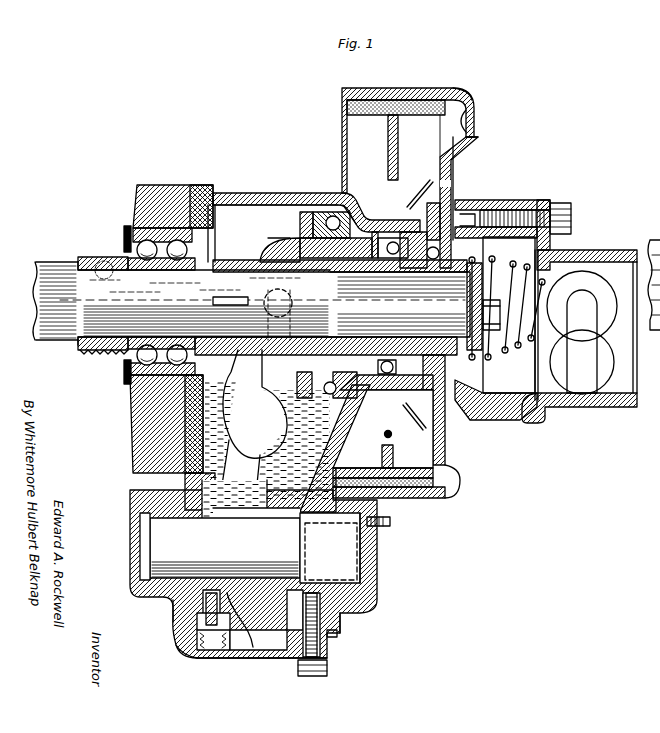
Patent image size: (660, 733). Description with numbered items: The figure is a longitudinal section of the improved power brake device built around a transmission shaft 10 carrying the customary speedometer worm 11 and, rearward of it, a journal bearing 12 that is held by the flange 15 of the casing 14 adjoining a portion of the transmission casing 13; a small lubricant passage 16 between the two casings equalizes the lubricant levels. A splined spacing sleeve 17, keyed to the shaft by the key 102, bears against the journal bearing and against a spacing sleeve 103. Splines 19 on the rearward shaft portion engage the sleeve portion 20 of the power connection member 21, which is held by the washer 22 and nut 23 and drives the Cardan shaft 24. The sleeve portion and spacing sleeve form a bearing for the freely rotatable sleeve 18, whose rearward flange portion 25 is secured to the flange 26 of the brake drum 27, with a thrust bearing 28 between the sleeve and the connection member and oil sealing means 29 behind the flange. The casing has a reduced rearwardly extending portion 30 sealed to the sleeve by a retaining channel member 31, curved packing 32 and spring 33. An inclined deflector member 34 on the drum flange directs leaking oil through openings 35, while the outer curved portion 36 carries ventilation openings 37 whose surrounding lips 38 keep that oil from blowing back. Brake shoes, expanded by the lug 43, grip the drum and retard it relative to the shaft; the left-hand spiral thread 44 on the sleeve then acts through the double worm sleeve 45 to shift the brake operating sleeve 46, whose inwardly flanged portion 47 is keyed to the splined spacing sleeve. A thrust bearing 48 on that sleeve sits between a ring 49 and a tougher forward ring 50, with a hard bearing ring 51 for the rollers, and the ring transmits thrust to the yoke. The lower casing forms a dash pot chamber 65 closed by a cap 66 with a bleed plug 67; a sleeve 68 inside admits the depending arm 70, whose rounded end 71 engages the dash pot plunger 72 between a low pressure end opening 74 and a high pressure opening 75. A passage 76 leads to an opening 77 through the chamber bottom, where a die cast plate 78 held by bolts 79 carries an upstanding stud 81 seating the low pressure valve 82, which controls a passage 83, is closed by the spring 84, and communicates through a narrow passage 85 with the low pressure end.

The transmission shaft 10 is at (104, 352).
The speedometer worm 11 is at (90, 262).
The journal bearing 12 is at (132, 226).
The transmission casing 13 is at (162, 185).
The casing 14 is at (238, 193).
The flange 15 is at (216, 212).
The lubricant passage 16 is at (130, 384).
The splined spacing sleeve 17 is at (220, 265).
The freely rotatable sleeve 18 is at (378, 394).
The splines 19 is at (293, 305).
The sleeve portion 20 is at (422, 280).
The power connection member 21 is at (530, 420).
The washer 22 is at (500, 268).
The nut 23 is at (510, 350).
The Cardan shaft 24 is at (615, 290).
The rearward flange portion 25 is at (458, 422).
The flange of brake drum 26 is at (455, 200).
The brake drum 27 is at (405, 88).
The thrust bearing 28 is at (487, 214).
The oil sealing means 29 is at (460, 214).
The reduced rearwardly extending portion 30 is at (380, 230).
The retaining channel member 31 is at (394, 232).
The curved packing 32 is at (412, 418).
The spring 33 is at (388, 430).
The inclined deflector member 34 is at (418, 193).
The openings 35 is at (452, 185).
The outer curved portion 36 is at (462, 94).
The ventilation openings 37 is at (470, 116).
The surrounding lips 38 is at (477, 138).
The lug 43 is at (655, 250).
The left-hand spiral thread 44 is at (270, 240).
The double worm sleeve 45 is at (292, 238).
The brake operating sleeve 46 is at (307, 218).
The inwardly flanged portion 47 is at (266, 252).
The thrust bearing 48 is at (330, 208).
The ring 49 is at (355, 194).
The forward ring 50 is at (337, 470).
The bearing ring 51 is at (345, 444).
The dash pot chamber 65 is at (130, 518).
The cap 66 is at (375, 574).
The plug 67 is at (392, 522).
The sleeve 68 is at (173, 608).
The depending arm 70 is at (267, 441).
The rounded end 71 is at (206, 550).
The dash pot plunger 72 is at (165, 538).
The end opening 74 is at (150, 565).
The opening 75 is at (352, 560).
The passage 76 is at (353, 610).
The opening 77 is at (337, 633).
The die cast plate 78 is at (286, 658).
The bolts 79 is at (315, 677).
The upstanding stud 81 is at (250, 640).
The low pressure valve 82 is at (206, 655).
The passage 83 is at (256, 650).
The spring 84 is at (186, 648).
The narrow passage 85 is at (190, 632).
The key 102 is at (213, 300).
The spacing sleeve 103 is at (296, 194).